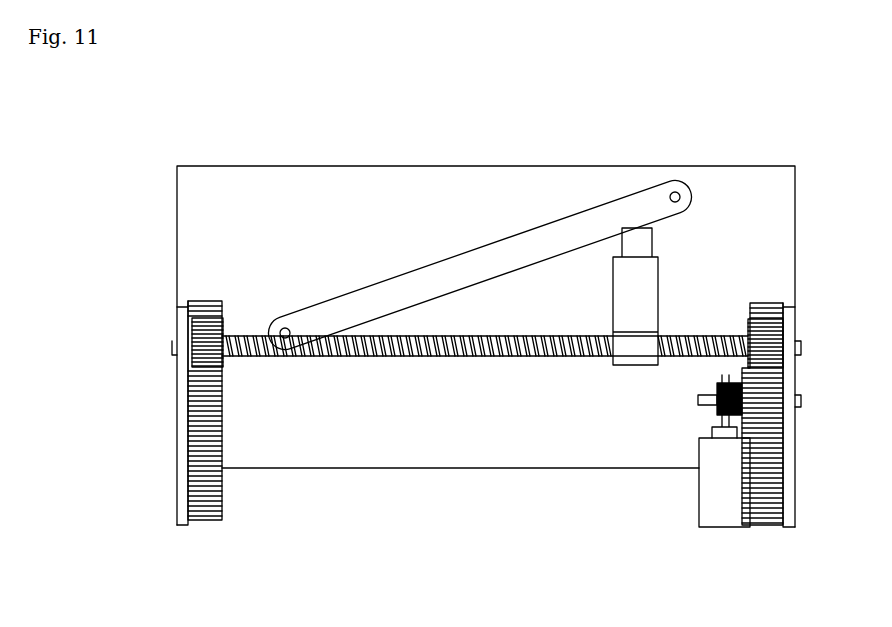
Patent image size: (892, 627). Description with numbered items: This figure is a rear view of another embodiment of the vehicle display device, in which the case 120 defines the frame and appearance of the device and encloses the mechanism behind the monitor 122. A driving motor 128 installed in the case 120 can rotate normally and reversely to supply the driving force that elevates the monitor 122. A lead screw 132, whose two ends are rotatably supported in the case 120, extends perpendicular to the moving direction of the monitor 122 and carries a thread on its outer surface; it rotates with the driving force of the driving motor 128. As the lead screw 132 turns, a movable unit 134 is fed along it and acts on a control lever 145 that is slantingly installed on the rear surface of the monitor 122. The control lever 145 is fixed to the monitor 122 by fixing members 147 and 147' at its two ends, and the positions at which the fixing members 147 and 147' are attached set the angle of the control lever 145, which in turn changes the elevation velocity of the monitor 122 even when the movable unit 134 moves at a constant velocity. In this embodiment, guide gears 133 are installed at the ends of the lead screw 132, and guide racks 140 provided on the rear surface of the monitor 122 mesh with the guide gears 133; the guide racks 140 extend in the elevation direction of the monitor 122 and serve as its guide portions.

The case 120 is at (182, 527).
The monitor 122 is at (287, 175).
The driving motor 128 is at (723, 527).
The lead screw 132 is at (447, 358).
The guide gears 133 is at (191, 328).
The movable unit 134 is at (622, 280).
The guide racks 140 is at (205, 308).
The control lever 145 is at (453, 268).
The fixing member 147 is at (244, 224).
The fixing member 147' is at (671, 153).